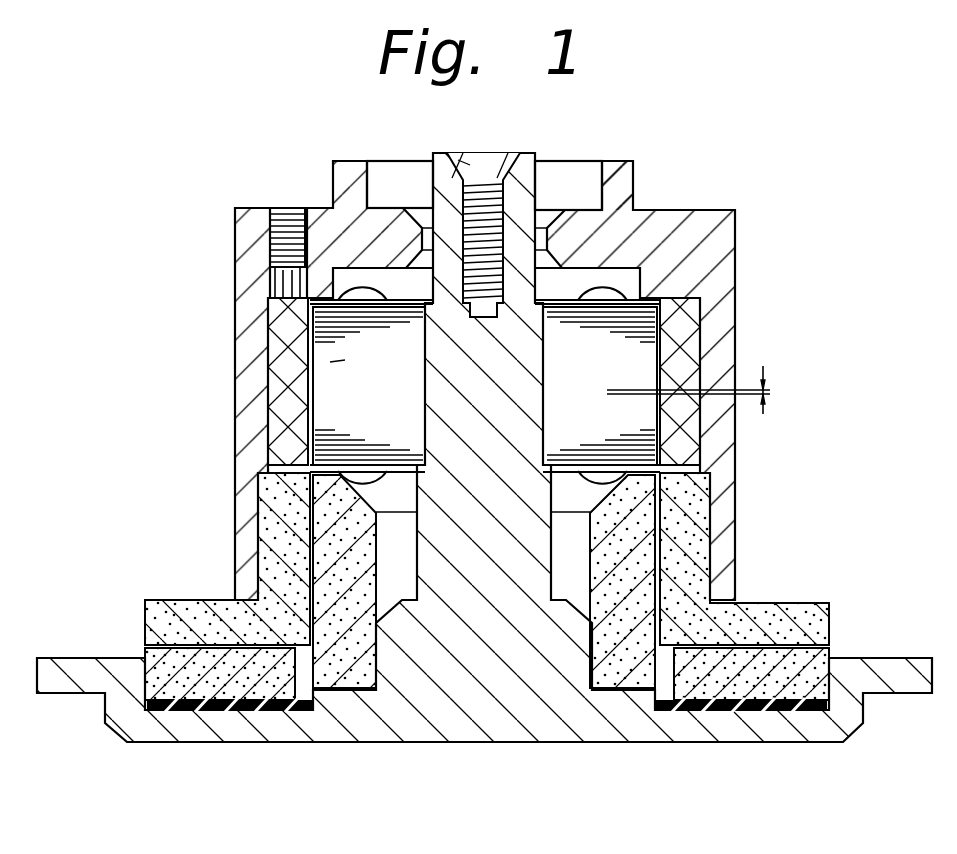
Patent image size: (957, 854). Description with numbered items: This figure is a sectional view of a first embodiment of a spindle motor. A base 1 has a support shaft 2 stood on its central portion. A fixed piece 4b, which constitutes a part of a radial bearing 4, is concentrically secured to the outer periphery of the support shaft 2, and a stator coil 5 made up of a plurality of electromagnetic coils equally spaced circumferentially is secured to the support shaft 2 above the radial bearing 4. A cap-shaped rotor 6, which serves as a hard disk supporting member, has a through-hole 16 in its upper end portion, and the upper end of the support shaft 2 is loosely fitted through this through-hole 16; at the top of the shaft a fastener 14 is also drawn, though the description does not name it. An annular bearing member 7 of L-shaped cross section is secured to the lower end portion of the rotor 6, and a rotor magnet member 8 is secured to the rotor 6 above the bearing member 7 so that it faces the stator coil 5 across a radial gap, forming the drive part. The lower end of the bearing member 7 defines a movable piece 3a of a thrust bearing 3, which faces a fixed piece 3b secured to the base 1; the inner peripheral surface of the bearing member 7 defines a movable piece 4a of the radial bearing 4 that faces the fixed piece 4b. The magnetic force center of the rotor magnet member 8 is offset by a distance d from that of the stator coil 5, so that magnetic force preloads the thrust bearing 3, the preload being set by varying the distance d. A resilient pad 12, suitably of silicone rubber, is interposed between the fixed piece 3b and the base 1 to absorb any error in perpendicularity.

The base 1 is at (291, 732).
The support shaft 2 is at (492, 488).
The thrust bearing 3 is at (147, 676).
The movable piece 3a is at (805, 620).
The fixed piece 3b is at (805, 680).
The radial bearing 4 is at (647, 573).
The movable piece 4a is at (690, 512).
The fixed piece 4b is at (650, 530).
The stator coil 5 is at (330, 358).
The rotor 6 is at (335, 238).
The bearing member 7 is at (275, 568).
The rotor magnet member 8 is at (292, 402).
The resilient pad 12 is at (242, 703).
The screw 14 is at (520, 162).
The through-hole 16 is at (552, 207).
The distance d is at (701, 390).